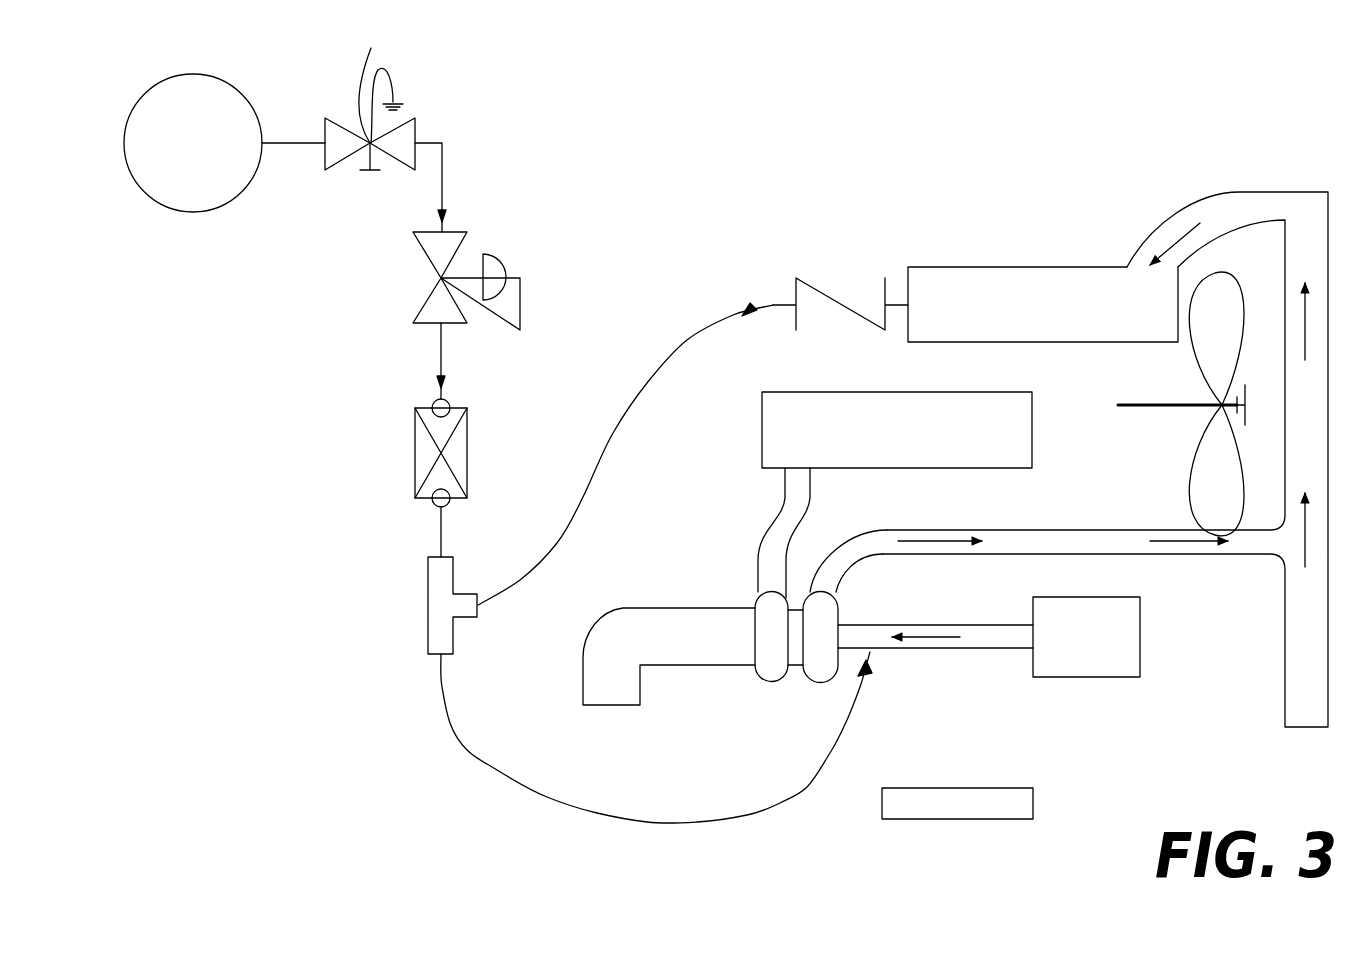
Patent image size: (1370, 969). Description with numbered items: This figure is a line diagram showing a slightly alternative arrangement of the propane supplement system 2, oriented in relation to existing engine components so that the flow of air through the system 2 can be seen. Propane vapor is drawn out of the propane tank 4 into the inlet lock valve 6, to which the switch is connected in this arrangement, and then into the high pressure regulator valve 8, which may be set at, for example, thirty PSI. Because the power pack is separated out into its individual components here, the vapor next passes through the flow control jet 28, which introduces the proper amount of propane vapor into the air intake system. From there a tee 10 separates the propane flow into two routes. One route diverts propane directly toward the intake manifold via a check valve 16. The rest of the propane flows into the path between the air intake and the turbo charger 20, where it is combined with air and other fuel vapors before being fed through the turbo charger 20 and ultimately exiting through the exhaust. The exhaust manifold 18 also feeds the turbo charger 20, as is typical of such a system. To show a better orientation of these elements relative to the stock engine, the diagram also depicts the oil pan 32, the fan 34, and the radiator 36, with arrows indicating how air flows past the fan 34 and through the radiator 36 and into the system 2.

The propane supplement system 2 is at (232, 779).
The propane tank 4 is at (137, 103).
The inlet lock valve 6 is at (337, 168).
The high pressure regulator valve 8 is at (430, 257).
The tee 10 is at (430, 590).
The check valve 16 is at (825, 295).
The exhaust manifold 18 is at (895, 495).
The turbo charger 20 is at (773, 682).
The flow control jet 28 is at (413, 430).
The oil pan 32 is at (1007, 788).
The fan 34 is at (1187, 423).
The radiator 36 is at (1285, 655).